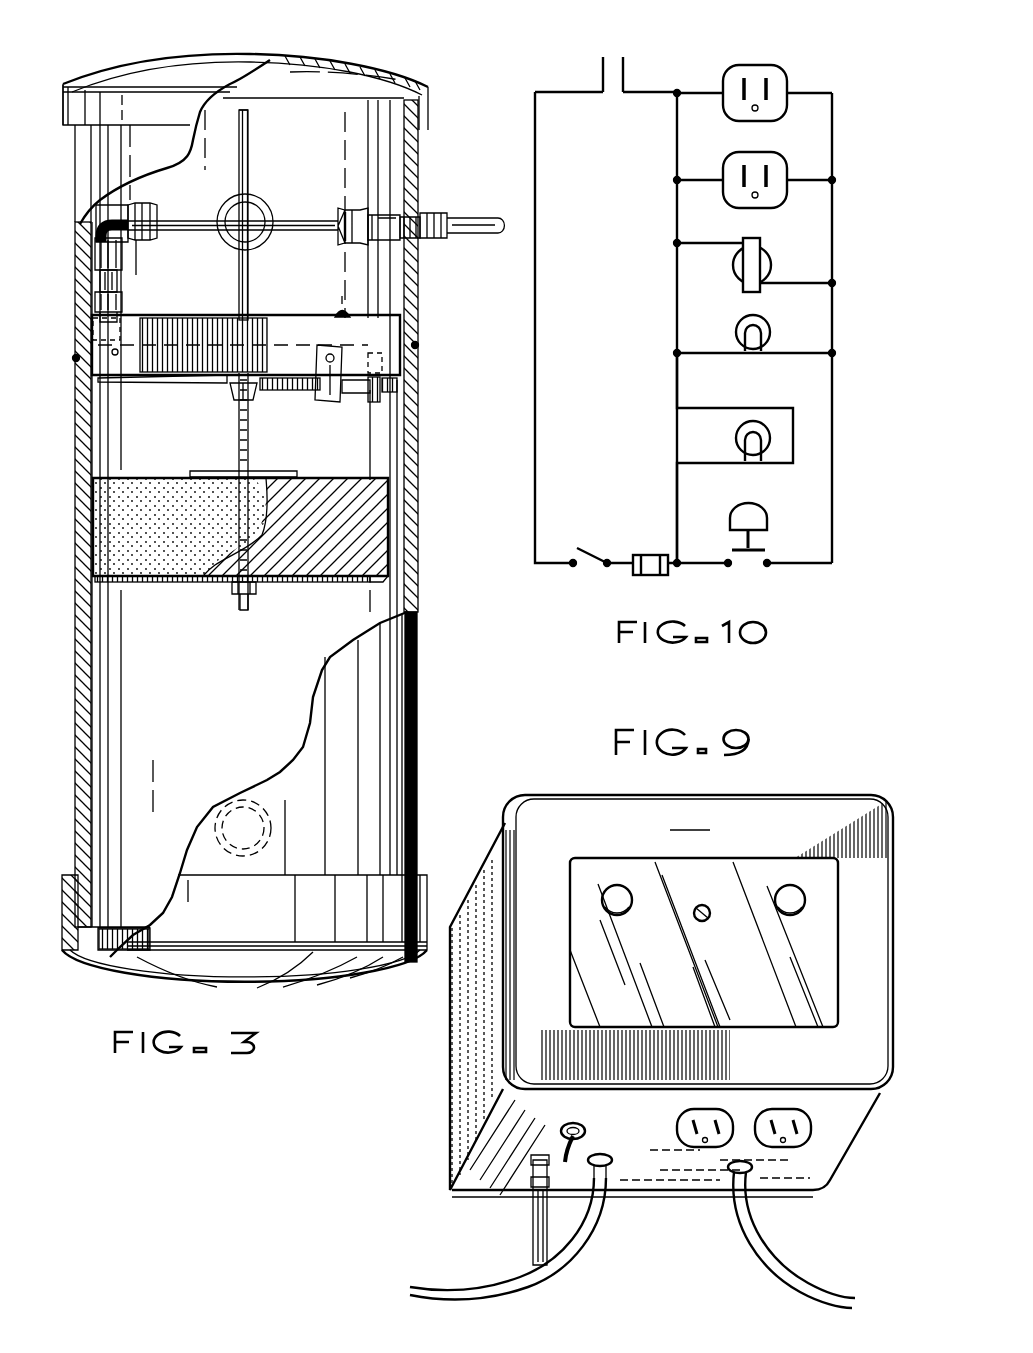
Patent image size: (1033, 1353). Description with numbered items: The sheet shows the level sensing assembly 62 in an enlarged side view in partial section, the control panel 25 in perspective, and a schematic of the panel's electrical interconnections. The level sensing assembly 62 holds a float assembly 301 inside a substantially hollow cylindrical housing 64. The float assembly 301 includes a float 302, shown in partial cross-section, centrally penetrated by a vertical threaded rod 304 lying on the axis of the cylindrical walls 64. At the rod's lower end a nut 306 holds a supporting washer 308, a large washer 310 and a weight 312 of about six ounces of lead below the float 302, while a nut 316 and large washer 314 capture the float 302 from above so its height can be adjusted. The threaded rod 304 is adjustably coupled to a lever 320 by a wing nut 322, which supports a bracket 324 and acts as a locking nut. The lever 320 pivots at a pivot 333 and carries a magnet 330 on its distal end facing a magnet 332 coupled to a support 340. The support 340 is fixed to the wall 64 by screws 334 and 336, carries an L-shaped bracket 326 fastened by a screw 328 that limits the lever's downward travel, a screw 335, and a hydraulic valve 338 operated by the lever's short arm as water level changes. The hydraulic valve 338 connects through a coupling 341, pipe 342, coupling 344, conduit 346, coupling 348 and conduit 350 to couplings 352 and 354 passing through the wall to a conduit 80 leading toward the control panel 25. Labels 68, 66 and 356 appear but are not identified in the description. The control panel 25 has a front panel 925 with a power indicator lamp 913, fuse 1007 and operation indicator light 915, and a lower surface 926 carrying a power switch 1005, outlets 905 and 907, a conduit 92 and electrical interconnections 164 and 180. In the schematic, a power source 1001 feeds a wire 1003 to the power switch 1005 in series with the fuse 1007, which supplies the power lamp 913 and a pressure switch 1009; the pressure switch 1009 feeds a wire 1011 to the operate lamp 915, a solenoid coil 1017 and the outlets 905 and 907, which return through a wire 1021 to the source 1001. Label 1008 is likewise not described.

In FIG. 3, the level sensing assembly 62 is at (177, 53).
In FIG. 3, the lid 68 is at (217, 60).
In FIG. 3, the cylindrical housing 64 is at (75, 555).
In FIG. 3, the canister bottom 66 is at (352, 990).
In FIG. 3, the pipe 342 is at (118, 206).
In FIG. 3, the coupling 344 is at (150, 222).
In FIG. 3, the pipe or conduit 346 is at (200, 236).
In FIG. 3, the coupling 341 is at (120, 258).
In FIG. 3, the hydraulic valve 338 is at (121, 305).
In FIG. 3, the coupling 348 is at (340, 240).
In FIG. 3, the nut 356 is at (345, 210).
In FIG. 3, the pipe or conduit 350 is at (384, 227).
In FIG. 3, the coupling 352 is at (397, 247).
In FIG. 3, the coupling 354 is at (447, 214).
In FIG. 3, the conduit 80 is at (500, 233).
In FIG. 3, the threaded rod 304 is at (248, 400).
In FIG. 3, the screw 335 is at (338, 298).
In FIG. 3, the support 340 is at (320, 317).
In FIG. 3, the screw 328 is at (246, 345).
In FIG. 3, the pivot 333 is at (116, 350).
In FIG. 3, the screw 334 is at (419, 345).
In FIG. 3, the screw 336 is at (72, 358).
In FIG. 3, the lever 320 is at (175, 382).
In FIG. 3, the bracket 324 is at (235, 390).
In FIG. 3, the L-shaped bracket 326 is at (328, 402).
In FIG. 3, the magnet 332 is at (398, 392).
In FIG. 3, the magnet 330 is at (372, 402).
In FIG. 3, the wing nut 322 is at (238, 420).
In FIG. 3, the nut 316 is at (248, 455).
In FIG. 3, the large washer 314 is at (298, 470).
In FIG. 3, the float assembly 301 is at (172, 465).
In FIG. 3, the float 302 is at (390, 478).
In FIG. 3, the large washer 310 is at (298, 583).
In FIG. 3, the weight 312 is at (325, 583).
In FIG. 3, the supporting washer 308 is at (230, 595).
In FIG. 3, the nut 306 is at (248, 608).
In FIG. 10, the electrical power source 1001 is at (658, 33).
In FIG. 10, the wire 1003 is at (540, 222).
In FIG. 10, the wire 1021 is at (677, 128).
In FIG. 10, the electrical outlet 907 is at (790, 85).
In FIG. 9, the electrical outlet 907 is at (806, 1135).
In FIG. 10, the electrical outlet 905 is at (787, 161).
In FIG. 9, the electrical outlet 905 is at (680, 1147).
In FIG. 10, the solenoid coil 1017 is at (796, 237).
In FIG. 10, the operation indicator lamp 915 is at (735, 320).
In FIG. 9, the operation indicator lamp 915 is at (792, 914).
In FIG. 10, the power indicator lamp 913 is at (737, 437).
In FIG. 9, the power indicator lamp 913 is at (602, 900).
In FIG. 10, the power switch 1005 is at (598, 550).
In FIG. 9, the power switch 1005 is at (585, 1128).
In FIG. 10, the fuse 1007 is at (652, 576).
In FIG. 9, the fuse 1007 is at (707, 905).
In FIG. 10, the wire 1008 is at (679, 520).
In FIG. 10, the pressure switch 1009 is at (756, 573).
In FIG. 10, the wire 1011 is at (835, 510).
In FIG. 9, the control panel 25 is at (398, 1134).
In FIG. 9, the front panel 925 is at (671, 996).
In FIG. 9, the lower surface 926 is at (786, 1180).
In FIG. 9, the conduit 92 is at (530, 1222).
In FIG. 9, the electrical interconnection 180 is at (596, 1228).
In FIG. 9, the electrical interconnection 164 is at (770, 1245).